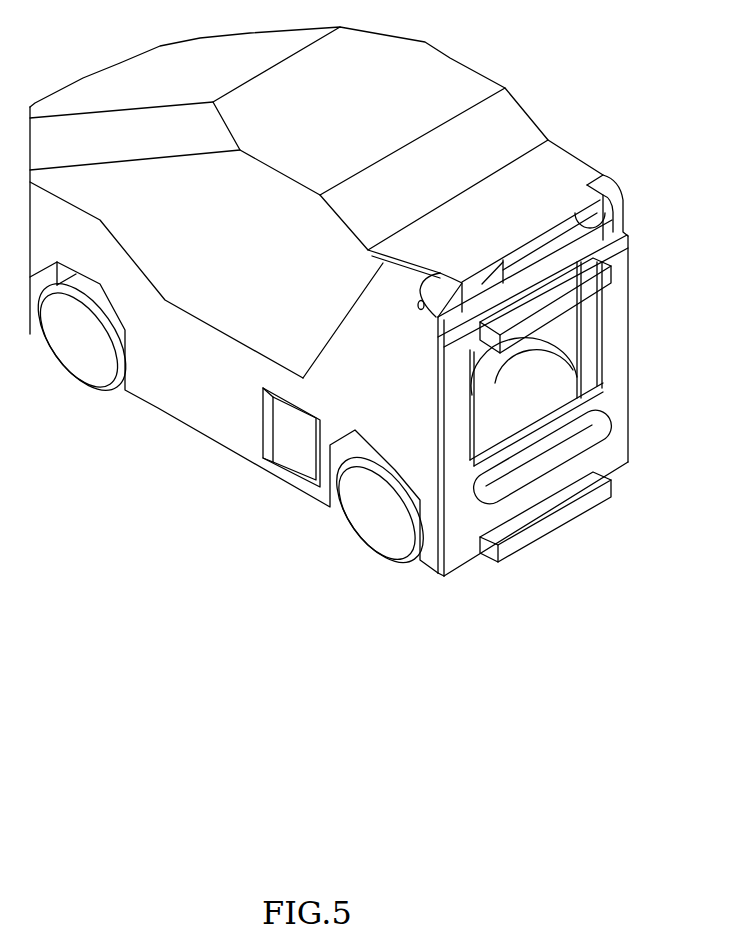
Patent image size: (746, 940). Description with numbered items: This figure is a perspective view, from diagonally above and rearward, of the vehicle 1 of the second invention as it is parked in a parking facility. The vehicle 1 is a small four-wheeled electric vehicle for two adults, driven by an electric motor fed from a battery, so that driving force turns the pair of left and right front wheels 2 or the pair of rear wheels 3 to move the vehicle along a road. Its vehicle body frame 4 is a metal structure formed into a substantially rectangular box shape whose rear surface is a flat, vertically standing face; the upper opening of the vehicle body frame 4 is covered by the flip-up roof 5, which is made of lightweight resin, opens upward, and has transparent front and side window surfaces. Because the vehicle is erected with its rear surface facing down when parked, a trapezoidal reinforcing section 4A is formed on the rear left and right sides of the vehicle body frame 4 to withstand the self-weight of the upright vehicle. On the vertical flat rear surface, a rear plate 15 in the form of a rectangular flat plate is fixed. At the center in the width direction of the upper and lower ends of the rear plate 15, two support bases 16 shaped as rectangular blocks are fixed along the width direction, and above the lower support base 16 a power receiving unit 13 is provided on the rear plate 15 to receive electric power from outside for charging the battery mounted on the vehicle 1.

The vehicle 1 is at (498, 64).
The front wheels 2 is at (65, 350).
The rear wheels 3 is at (367, 528).
The vehicle body frame 4 is at (190, 407).
The reinforcing section 4A is at (354, 346).
The roof 5 is at (207, 62).
The power receiving unit 13 is at (588, 440).
The rear plate 15 is at (617, 364).
The support bases 16 is at (605, 284).